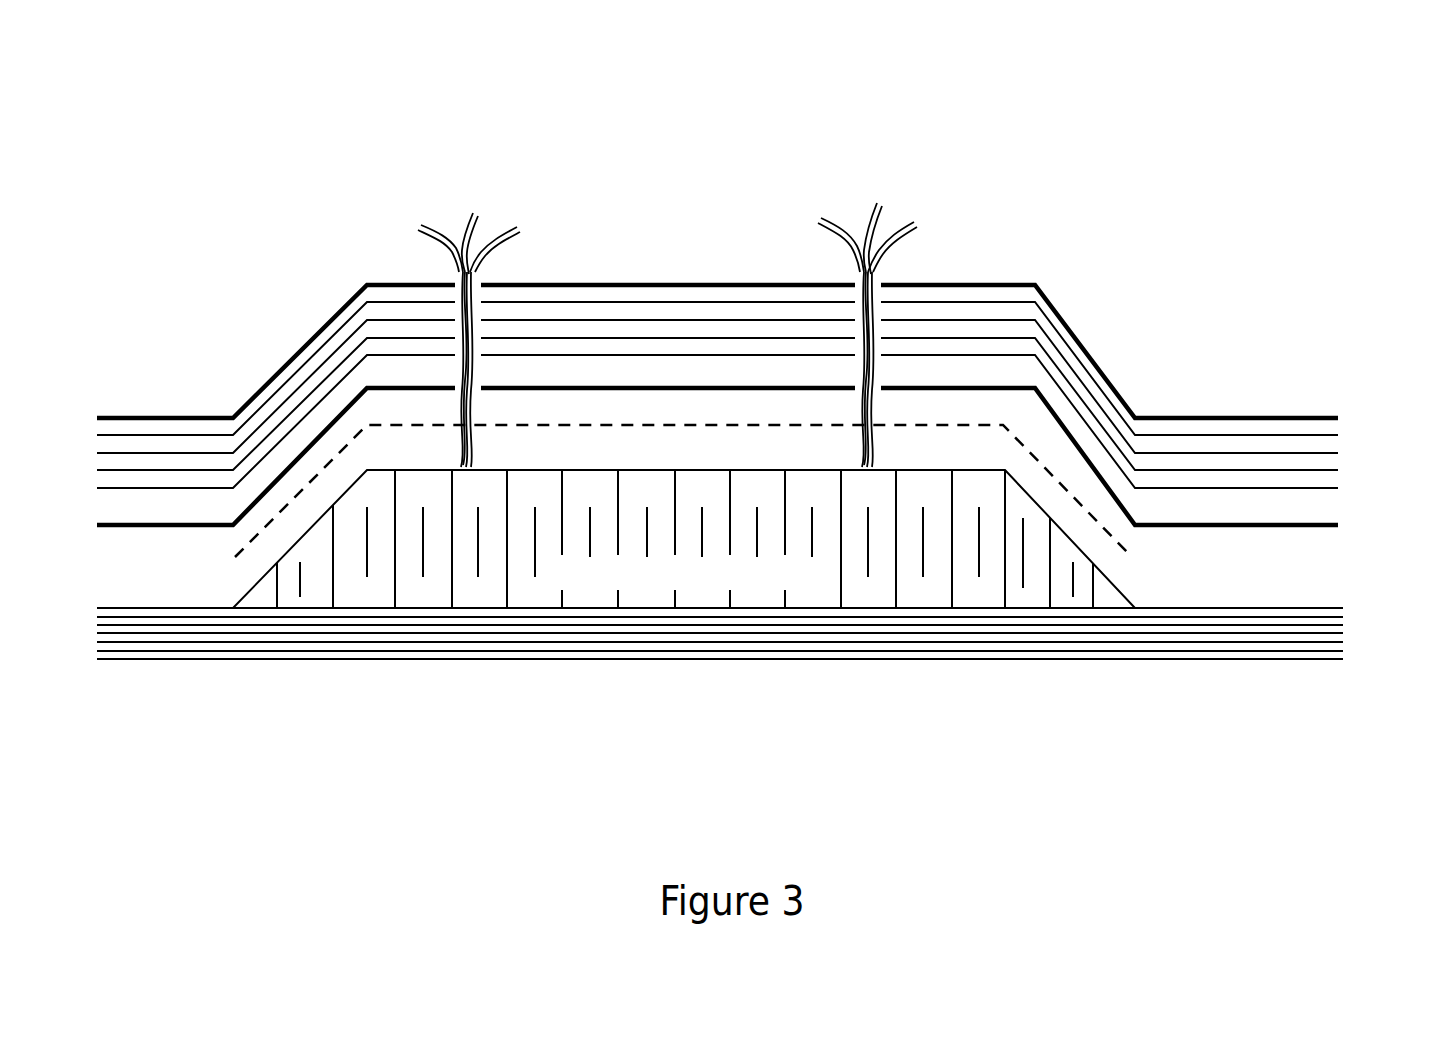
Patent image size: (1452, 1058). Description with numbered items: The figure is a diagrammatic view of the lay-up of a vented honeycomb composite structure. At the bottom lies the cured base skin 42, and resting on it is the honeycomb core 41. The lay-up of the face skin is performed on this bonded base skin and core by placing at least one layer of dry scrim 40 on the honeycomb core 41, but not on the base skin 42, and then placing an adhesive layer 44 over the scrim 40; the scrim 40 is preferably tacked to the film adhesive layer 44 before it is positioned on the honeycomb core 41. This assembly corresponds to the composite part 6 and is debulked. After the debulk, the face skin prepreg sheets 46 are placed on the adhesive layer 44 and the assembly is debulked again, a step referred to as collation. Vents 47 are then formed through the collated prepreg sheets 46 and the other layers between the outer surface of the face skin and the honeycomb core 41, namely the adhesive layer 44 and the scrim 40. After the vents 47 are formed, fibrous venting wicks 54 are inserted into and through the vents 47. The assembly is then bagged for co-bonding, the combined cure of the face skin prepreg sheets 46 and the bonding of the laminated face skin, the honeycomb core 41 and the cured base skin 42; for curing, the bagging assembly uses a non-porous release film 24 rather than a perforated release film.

The composite part 6 is at (942, 201).
The non-porous release film 24 is at (350, 288).
The dry scrim 40 is at (1072, 480).
The honeycomb core 41 is at (516, 467).
The base skin 42 is at (1343, 608).
The adhesive layer 44 is at (1005, 378).
The face skin prepreg sheets 46 is at (1353, 432).
The vents 47 is at (853, 283).
The fibrous venting wicks 54 is at (860, 213).